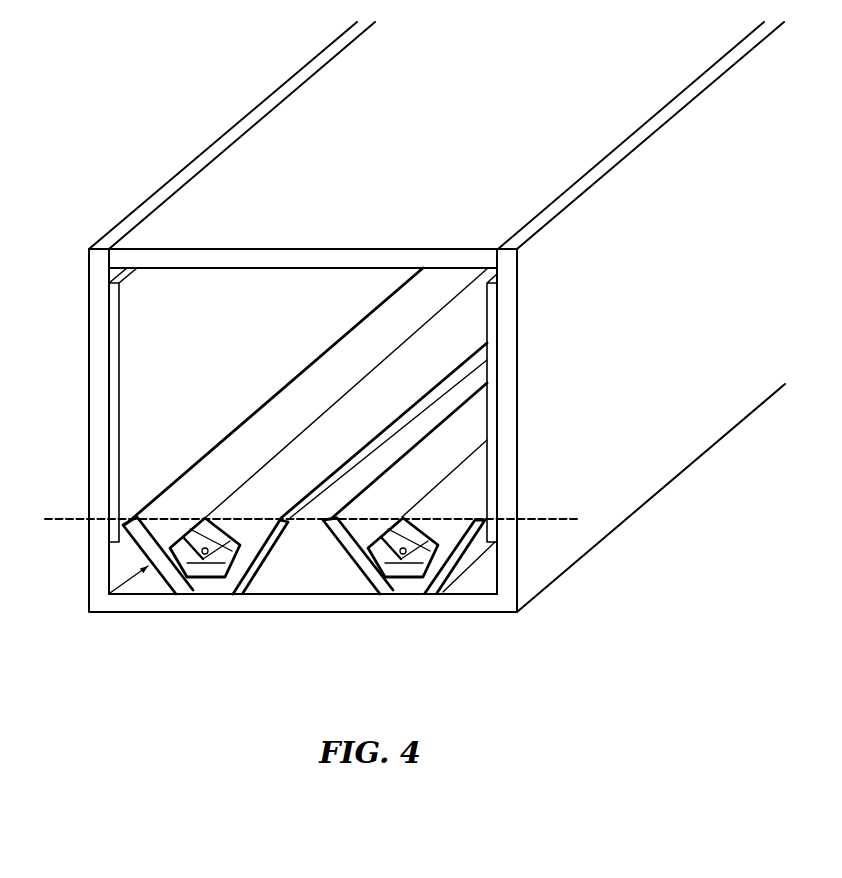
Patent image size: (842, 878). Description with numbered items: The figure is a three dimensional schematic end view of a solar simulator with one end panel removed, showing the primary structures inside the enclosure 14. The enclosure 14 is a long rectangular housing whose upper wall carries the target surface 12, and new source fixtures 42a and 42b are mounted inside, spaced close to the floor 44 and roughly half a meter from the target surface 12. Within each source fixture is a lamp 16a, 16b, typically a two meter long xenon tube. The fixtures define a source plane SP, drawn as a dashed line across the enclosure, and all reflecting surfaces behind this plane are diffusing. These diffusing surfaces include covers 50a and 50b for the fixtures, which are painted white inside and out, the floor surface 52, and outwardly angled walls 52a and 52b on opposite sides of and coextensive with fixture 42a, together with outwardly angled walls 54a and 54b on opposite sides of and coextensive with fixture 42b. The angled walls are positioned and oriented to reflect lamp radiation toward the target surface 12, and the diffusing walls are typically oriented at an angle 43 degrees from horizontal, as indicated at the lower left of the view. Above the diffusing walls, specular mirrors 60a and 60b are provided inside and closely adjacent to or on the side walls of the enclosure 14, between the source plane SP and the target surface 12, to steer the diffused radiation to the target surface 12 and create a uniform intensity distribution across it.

The target surface 12 is at (272, 168).
The enclosure 14 is at (685, 417).
The lamp 16a is at (200, 558).
The lamp 16b is at (394, 566).
The source fixture 42a is at (234, 479).
The source fixture 42b is at (413, 498).
The angle of diffusing walls 43 is at (136, 590).
The floor 44 is at (117, 607).
The cover 50a is at (428, 381).
The cover 50b is at (479, 498).
The floor surface 52 is at (306, 567).
The outwardly angled wall 52a is at (140, 543).
The outwardly angled wall 52b is at (267, 567).
The outwardly angled wall 54a is at (350, 567).
The outwardly angled wall 54b is at (460, 568).
The mirror 60a is at (141, 299).
The mirror 60b is at (487, 302).
The source plane sp is at (297, 519).